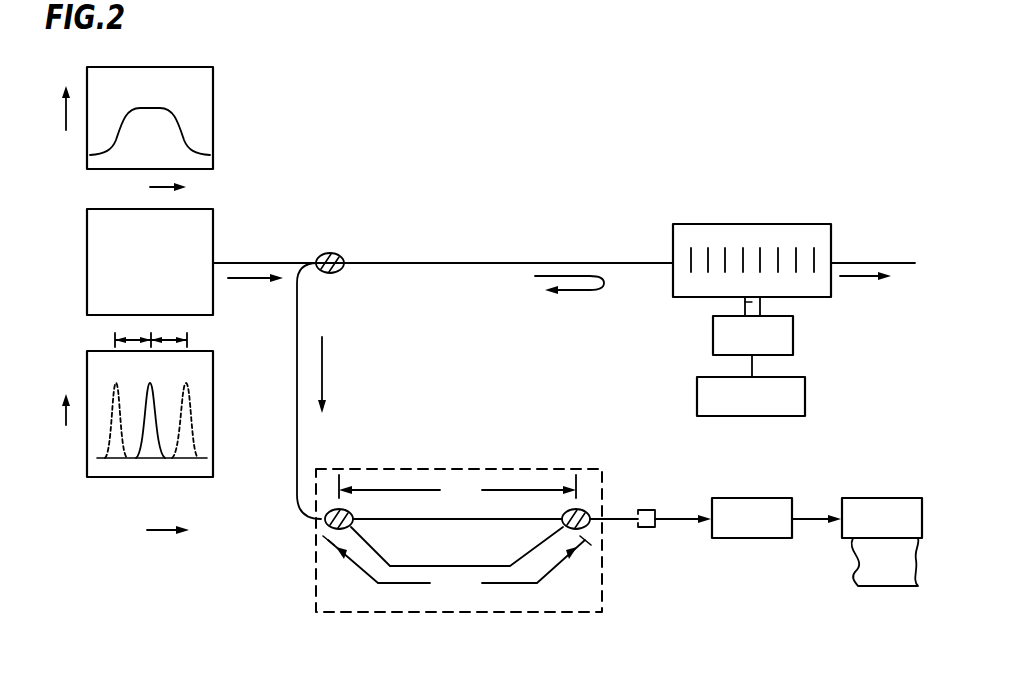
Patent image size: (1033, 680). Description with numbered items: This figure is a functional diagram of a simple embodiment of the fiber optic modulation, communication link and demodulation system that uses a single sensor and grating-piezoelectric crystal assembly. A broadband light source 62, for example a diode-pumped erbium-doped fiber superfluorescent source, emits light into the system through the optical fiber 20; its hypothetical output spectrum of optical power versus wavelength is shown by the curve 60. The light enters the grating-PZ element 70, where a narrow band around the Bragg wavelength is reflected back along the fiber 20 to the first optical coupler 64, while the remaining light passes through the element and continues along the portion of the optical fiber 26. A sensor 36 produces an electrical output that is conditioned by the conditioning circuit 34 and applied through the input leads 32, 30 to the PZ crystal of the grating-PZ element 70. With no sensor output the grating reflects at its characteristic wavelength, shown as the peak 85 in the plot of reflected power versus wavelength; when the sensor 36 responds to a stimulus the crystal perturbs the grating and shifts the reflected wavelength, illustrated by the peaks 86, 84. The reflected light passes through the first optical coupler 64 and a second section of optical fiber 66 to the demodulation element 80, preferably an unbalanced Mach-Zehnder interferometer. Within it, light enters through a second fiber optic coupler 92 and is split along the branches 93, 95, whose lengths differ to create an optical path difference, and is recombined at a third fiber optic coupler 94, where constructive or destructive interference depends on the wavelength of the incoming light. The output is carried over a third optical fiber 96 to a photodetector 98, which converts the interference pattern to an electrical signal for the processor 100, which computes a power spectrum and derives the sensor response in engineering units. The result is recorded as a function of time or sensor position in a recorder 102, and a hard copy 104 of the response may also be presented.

The optical fiber 20 is at (638, 263).
The portion of the optical fiber 26 is at (900, 263).
The input lead 30 is at (760, 304).
The input lead 32 is at (745, 303).
The conditioning circuit 34 is at (793, 337).
The sensor 36 is at (805, 392).
The curve 60 is at (148, 108).
The light source 62 is at (213, 243).
The first optical coupler 64 is at (343, 256).
The second section of optical fiber 66 is at (300, 325).
The grating-PZ element 70 is at (768, 224).
The demodulation element 80 is at (602, 560).
The peak 84 is at (190, 400).
The peak 85 is at (157, 402).
The peak 86 is at (112, 400).
The second fiber optic coupler 92 is at (352, 524).
The interferometer branch 93 is at (487, 519).
The third fiber optic coupler 94 is at (565, 523).
The interferometer branch 95 is at (510, 566).
The third optical fiber 96 is at (620, 512).
The photodetector 98 is at (645, 527).
The processor 100 is at (750, 538).
The recorder 102 is at (860, 498).
The hard copy 104 is at (893, 586).